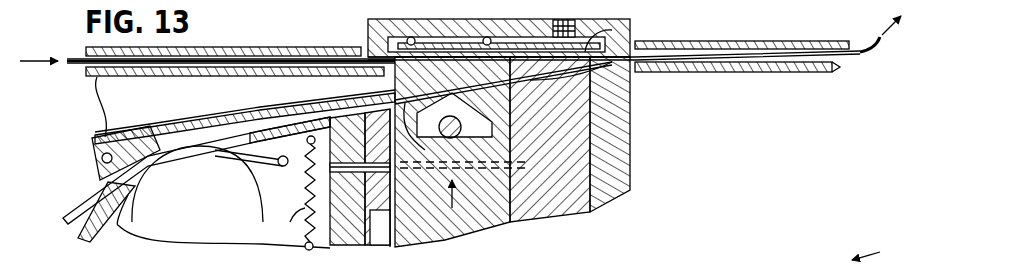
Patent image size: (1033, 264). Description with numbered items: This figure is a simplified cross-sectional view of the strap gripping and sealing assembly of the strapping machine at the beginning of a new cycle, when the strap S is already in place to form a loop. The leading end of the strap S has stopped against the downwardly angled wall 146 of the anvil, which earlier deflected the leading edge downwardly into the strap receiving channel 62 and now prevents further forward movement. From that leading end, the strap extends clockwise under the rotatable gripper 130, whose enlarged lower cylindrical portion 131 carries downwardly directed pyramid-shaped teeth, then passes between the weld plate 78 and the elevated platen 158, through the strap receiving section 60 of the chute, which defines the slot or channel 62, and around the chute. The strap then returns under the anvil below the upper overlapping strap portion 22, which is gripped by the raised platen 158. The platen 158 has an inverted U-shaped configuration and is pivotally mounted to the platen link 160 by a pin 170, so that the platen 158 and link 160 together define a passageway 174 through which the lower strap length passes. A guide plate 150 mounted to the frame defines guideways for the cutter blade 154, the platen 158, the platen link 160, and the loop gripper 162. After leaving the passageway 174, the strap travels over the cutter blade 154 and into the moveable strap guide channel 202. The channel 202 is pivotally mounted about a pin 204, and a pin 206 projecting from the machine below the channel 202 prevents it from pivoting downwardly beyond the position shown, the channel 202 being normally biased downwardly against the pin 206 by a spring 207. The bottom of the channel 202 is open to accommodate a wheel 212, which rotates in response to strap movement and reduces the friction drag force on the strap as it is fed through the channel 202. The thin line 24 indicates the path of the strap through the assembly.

The upper overlapping strap portion 22 is at (240, 46).
The sheet path 24 is at (553, 72).
The strap receiving section 60 is at (250, 45).
The slot or channel 62 is at (853, 58).
The weld plate 78 is at (390, 43).
The rotatable gripper pad 130 is at (633, 40).
The enlarged lower cylindrical portion 131 is at (598, 34).
The downwardly angled wall 146 is at (607, 66).
The guide plate 150 is at (613, 144).
The cutter knife or blade 154 is at (392, 250).
The strap-engaging block or platen 158 is at (397, 80).
The platen link 160 is at (497, 222).
The loop gripper 162 is at (580, 168).
The pin 170 is at (456, 135).
The passageway 174 is at (462, 185).
The moveable strap guide channel 202 is at (293, 110).
The pin 204 is at (127, 132).
The pin 206 is at (247, 172).
The spring 207 is at (284, 193).
The wheel 212 is at (197, 188).
The strap S is at (872, 50).